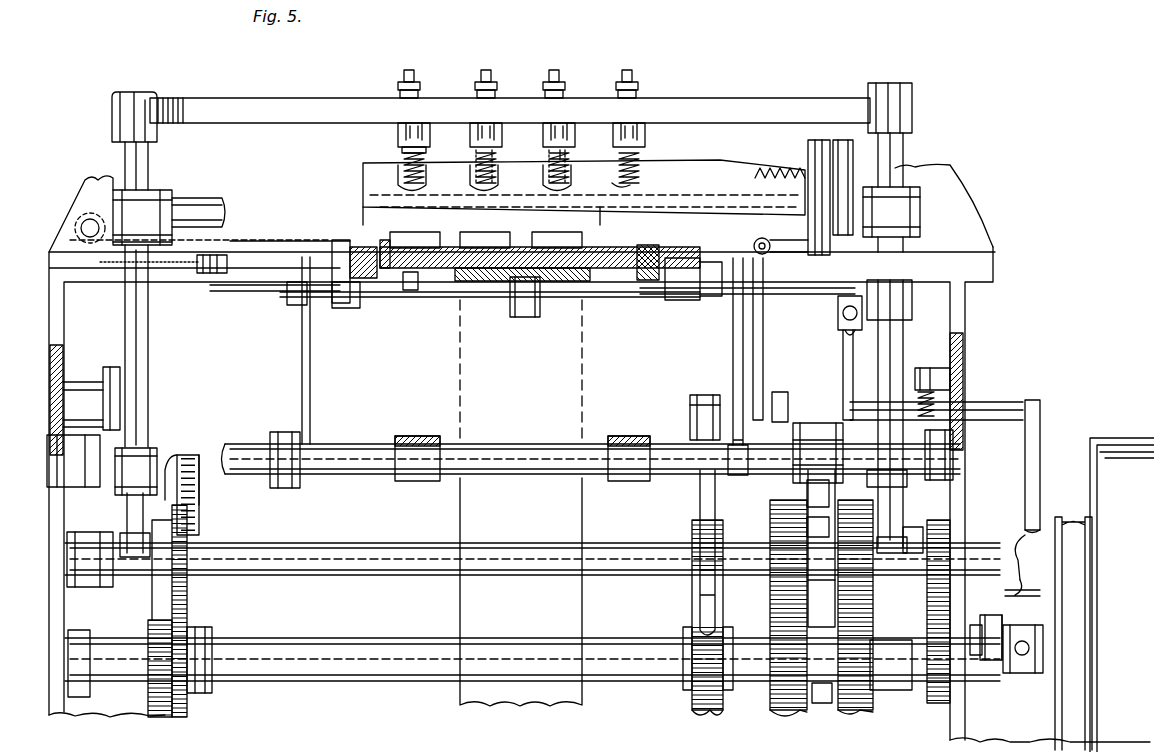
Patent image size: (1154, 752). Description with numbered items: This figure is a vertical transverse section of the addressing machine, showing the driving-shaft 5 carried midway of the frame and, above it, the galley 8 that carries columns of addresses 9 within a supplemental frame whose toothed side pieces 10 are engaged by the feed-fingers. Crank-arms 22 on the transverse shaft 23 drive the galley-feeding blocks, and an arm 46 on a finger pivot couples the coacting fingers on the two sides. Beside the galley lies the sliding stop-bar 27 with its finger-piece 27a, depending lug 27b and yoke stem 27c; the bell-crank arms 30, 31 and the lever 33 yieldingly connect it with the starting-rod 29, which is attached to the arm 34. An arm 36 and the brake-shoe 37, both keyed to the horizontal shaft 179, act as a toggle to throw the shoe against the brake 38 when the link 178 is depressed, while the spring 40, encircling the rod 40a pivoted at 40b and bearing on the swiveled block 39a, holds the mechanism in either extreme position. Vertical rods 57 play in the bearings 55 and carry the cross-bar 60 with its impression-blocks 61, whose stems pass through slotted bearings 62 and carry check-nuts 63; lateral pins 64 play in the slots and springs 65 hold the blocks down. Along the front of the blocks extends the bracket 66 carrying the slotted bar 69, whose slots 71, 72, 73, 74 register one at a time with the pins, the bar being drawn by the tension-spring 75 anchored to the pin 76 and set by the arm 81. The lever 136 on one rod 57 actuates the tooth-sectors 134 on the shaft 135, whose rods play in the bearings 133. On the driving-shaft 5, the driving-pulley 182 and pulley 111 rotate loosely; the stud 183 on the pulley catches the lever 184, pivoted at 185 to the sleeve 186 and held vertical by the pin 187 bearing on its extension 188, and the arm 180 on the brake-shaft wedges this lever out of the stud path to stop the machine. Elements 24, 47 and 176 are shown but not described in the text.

The driving-shaft 5 is at (362, 648).
The galley 8 is at (362, 282).
The addresses 9 is at (428, 240).
The side pieces 10 is at (385, 240).
The crank-arms 22 is at (300, 338).
The transverse shaft 23 is at (495, 444).
The gear hub 24 is at (805, 492).
The sliding stop-bar 27 is at (322, 238).
The finger-piece 27a is at (68, 232).
The perforated depending lug 27b is at (218, 242).
The stem 27c is at (115, 262).
The starting-rod 29 is at (836, 312).
The bell-crank arm 30 is at (185, 272).
The bell-crank arm 31 is at (268, 290).
The lever 33 is at (592, 298).
The arm 34 is at (843, 355).
The arm 36 is at (788, 398).
The brake-shoe 37 is at (700, 650).
The brake 38 is at (692, 592).
The swiveled block 39a is at (940, 460).
The spring 40 is at (963, 392).
The rod 40a is at (963, 425).
The pivot 40b is at (930, 364).
The arm 46 is at (672, 300).
The block 47 is at (467, 300).
The bearings 55 is at (114, 490).
The vertical rods 57 is at (150, 172).
The cross-bar 60 is at (268, 92).
The impression-blocks 61 is at (382, 208).
The slotted bearings 62 is at (398, 139).
The adjusting and check-nuts 63 is at (398, 84).
The lateral pins 64 is at (430, 138).
The springs 65 is at (398, 160).
The bracket 66 is at (700, 214).
The slotted bar 69 is at (640, 172).
The slot 71 is at (398, 178).
The slot 72 is at (470, 174).
The slot 73 is at (543, 174).
The slot 74 is at (566, 156).
The tension-spring 75 is at (765, 168).
The pin 76 is at (830, 175).
The arm 81 is at (820, 140).
The pulley 111 is at (1068, 518).
The bearings 133 is at (210, 635).
The tooth-sectors 134 is at (190, 518).
The shaft 135 is at (407, 543).
The lever 136 is at (108, 395).
The roller 176 is at (880, 245).
The link 178 is at (764, 350).
The horizontal shaft 179 is at (722, 400).
The arm 180 is at (1025, 465).
The driving-pulley 182 is at (1095, 437).
The lateral stud 183 is at (1015, 585).
The lever 184 is at (1022, 540).
The pivot 185 is at (1018, 655).
The sleeve 186 is at (1026, 661).
The pin 187 is at (972, 626).
The lateral extension 188 is at (990, 614).